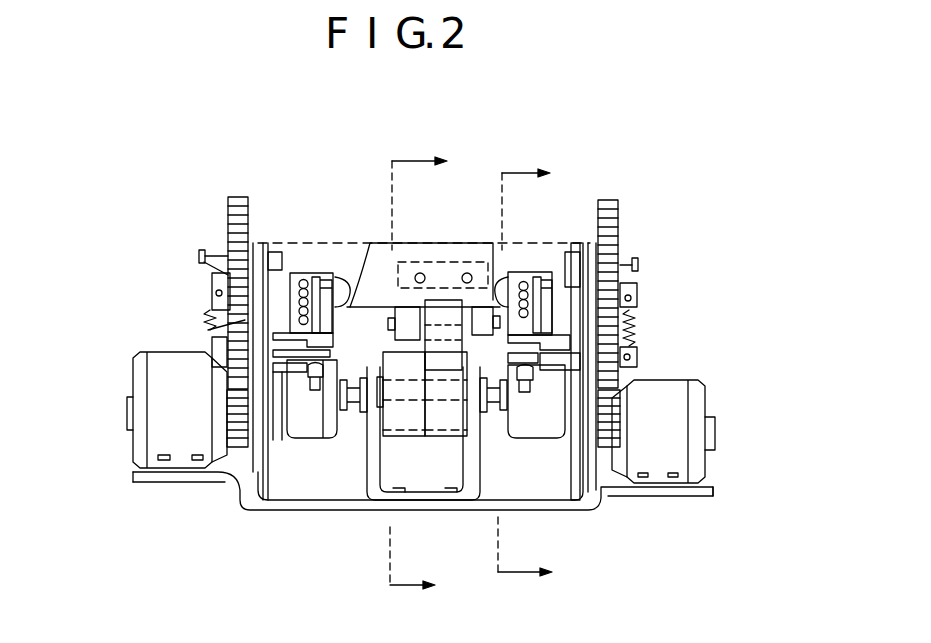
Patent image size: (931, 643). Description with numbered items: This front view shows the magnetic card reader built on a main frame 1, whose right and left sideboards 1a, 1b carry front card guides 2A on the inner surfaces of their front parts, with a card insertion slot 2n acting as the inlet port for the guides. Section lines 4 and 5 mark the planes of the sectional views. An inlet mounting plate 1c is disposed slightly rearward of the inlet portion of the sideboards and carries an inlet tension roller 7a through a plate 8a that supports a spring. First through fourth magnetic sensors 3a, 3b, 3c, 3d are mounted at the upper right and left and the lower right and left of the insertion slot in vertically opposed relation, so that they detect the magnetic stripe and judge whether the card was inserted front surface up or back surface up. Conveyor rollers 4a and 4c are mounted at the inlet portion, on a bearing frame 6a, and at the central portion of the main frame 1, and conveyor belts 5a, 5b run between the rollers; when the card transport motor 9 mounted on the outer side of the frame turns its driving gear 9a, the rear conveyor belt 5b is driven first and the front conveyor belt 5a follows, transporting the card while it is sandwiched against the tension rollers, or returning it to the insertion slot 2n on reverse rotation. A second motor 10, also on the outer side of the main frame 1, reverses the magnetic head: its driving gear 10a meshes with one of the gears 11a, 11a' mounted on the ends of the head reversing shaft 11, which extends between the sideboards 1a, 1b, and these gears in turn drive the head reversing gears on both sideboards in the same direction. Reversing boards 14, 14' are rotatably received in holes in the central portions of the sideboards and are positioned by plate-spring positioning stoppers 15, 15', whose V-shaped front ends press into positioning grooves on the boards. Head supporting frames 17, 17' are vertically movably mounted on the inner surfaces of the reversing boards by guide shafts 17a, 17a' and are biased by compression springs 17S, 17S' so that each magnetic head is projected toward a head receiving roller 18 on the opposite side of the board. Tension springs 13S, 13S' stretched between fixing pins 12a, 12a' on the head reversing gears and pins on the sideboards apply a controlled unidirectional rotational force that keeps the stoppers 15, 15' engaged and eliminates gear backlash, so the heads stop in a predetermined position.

The main frame 1 is at (258, 515).
The right sideboard 1a is at (608, 493).
The left sideboard 1b is at (245, 478).
The inlet mounting plate 1c is at (375, 245).
The front card guide 2A is at (253, 287).
The card insertion slot 2n is at (212, 473).
The first magnetic sensor 3a is at (556, 290).
The second magnetic sensor 3b is at (345, 280).
The third magnetic sensor 3c is at (530, 385).
The fourth magnetic sensor 3d is at (307, 450).
The section line 4— 4 is at (415, 375).
The conveyor roller 4a is at (424, 437).
The conveyor roller 4c is at (397, 447).
The section line 5— 5 is at (525, 379).
The front conveyor belt 5a is at (453, 440).
The rear conveyor belt 5b is at (410, 440).
The bearing frame 6a is at (477, 473).
The inlet tension roller 7a is at (433, 300).
The spring supporting plate 8a is at (480, 300).
The card transport motor 9 is at (673, 383).
The driving gear 9a is at (632, 455).
The head reversing motor 10 is at (153, 397).
The driving gear 10a is at (227, 418).
The head reversing shaft 11 is at (380, 300).
The operatively connected gear 11a is at (209, 259).
The operatively connected gear 11a' is at (642, 265).
The fixing pin 12a is at (166, 244).
The fixing pin 12a' is at (682, 263).
The tension spring 13S is at (144, 311).
The tension spring 13S' is at (690, 328).
The reversing board 14 is at (160, 343).
The reversing board 14' is at (678, 321).
The positioning stopper 15 is at (252, 311).
The positioning stopper 15' is at (596, 321).
The head supporting frame 17 is at (296, 218).
The head supporting frame 17' is at (530, 254).
The compression spring 17S is at (317, 218).
The compression spring 17S' is at (529, 269).
The guide shaft 17a is at (303, 255).
The guide shaft 17a' is at (544, 238).
The head receiving roller 18 is at (327, 367).